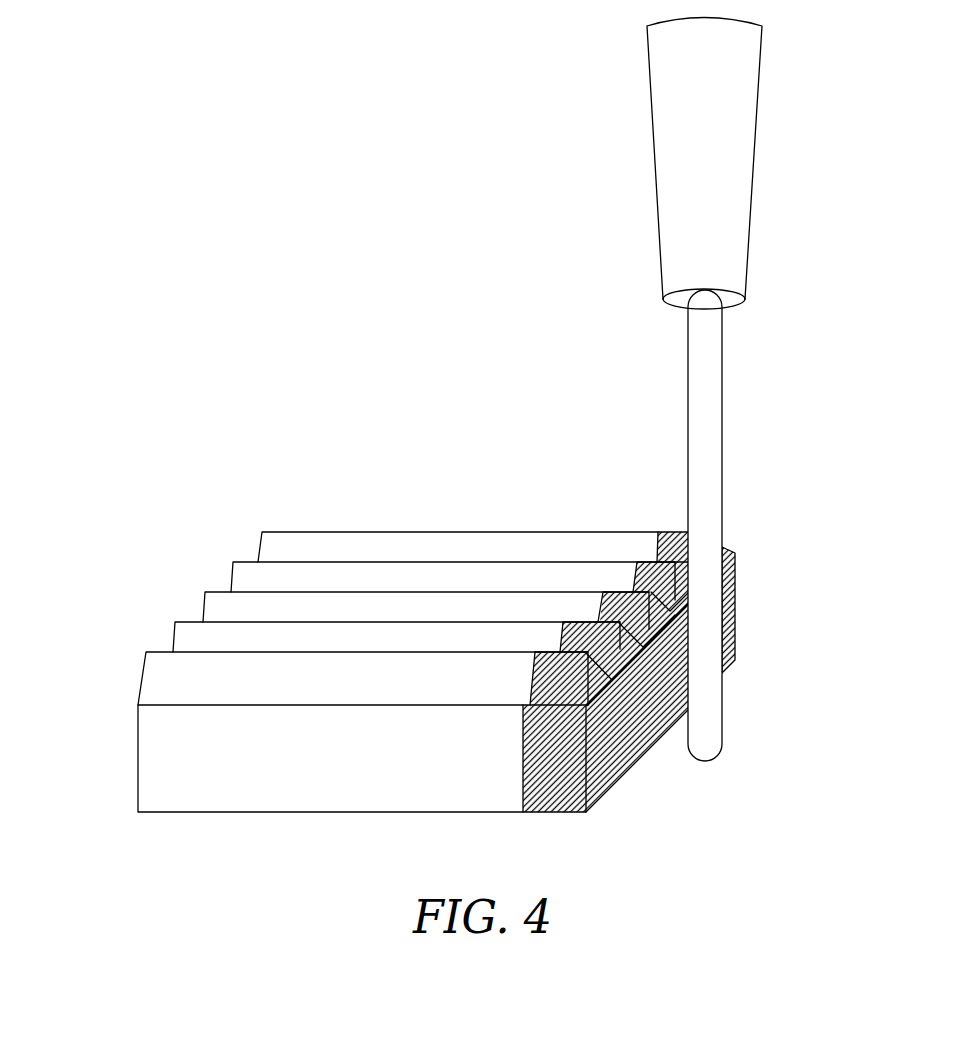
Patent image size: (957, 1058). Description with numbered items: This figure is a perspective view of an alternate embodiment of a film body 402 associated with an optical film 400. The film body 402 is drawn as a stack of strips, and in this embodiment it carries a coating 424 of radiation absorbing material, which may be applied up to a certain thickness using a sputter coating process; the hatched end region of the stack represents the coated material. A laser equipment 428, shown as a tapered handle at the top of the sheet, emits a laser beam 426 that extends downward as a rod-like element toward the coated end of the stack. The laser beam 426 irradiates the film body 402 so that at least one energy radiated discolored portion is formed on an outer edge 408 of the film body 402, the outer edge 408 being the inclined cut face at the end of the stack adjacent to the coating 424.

The optical film 400 is at (753, 590).
The film body 402 is at (280, 523).
The outer edge 408 is at (615, 745).
The coating 424 is at (643, 704).
The laser beam 426 is at (702, 415).
The laser equipment 428 is at (738, 145).